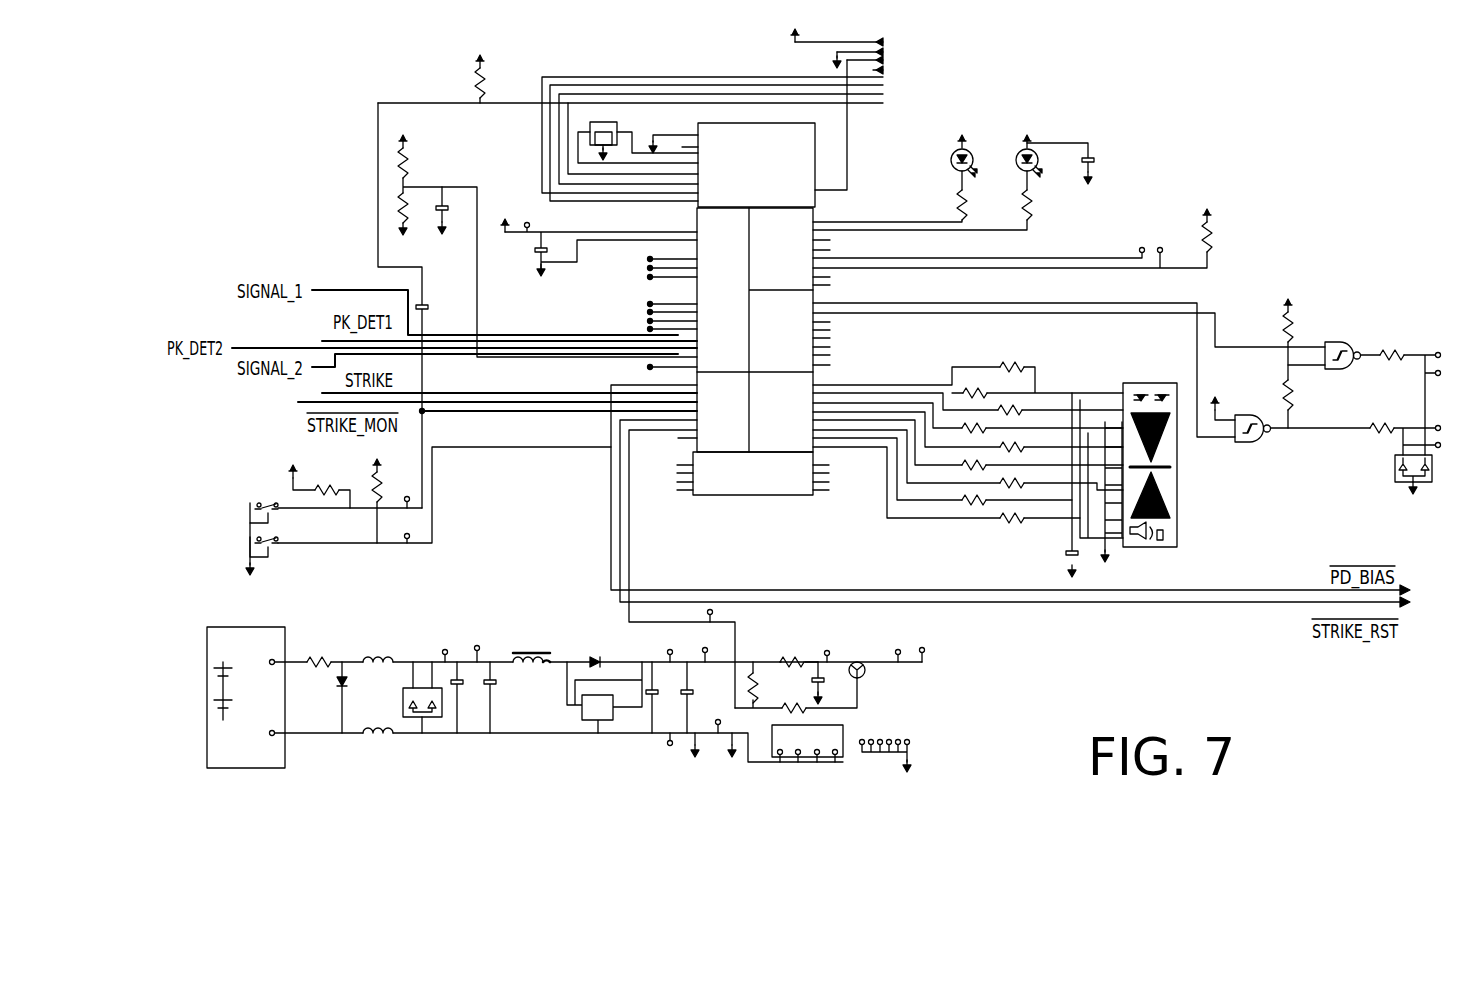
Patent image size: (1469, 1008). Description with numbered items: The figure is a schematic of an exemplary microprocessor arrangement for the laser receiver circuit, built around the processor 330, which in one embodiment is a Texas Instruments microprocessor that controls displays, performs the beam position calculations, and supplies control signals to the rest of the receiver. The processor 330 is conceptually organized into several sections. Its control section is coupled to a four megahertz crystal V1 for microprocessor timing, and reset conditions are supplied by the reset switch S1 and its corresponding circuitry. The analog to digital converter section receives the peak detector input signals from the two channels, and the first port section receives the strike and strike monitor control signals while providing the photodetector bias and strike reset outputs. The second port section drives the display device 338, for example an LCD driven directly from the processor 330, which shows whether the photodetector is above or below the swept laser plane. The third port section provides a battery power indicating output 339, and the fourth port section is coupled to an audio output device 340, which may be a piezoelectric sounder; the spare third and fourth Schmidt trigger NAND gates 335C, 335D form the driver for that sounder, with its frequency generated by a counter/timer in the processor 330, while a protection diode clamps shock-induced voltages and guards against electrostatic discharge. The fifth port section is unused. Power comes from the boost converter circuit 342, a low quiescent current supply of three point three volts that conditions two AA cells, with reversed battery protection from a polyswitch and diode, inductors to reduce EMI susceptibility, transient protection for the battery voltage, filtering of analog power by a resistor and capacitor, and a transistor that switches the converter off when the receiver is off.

The processor 330 is at (748, 497).
The third NAND gate 335C is at (1333, 342).
The fourth NAND gate 335D is at (1250, 443).
The display device 338 is at (942, 533).
The battery power indicating output 339 is at (1124, 170).
The audio output device 340 is at (1327, 360).
The boost converter circuit 342 is at (548, 751).
The crystal V1 is at (603, 122).
The reset switch S1 is at (250, 513).